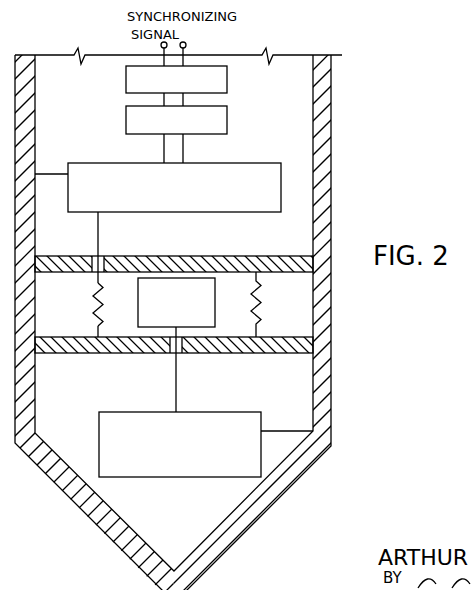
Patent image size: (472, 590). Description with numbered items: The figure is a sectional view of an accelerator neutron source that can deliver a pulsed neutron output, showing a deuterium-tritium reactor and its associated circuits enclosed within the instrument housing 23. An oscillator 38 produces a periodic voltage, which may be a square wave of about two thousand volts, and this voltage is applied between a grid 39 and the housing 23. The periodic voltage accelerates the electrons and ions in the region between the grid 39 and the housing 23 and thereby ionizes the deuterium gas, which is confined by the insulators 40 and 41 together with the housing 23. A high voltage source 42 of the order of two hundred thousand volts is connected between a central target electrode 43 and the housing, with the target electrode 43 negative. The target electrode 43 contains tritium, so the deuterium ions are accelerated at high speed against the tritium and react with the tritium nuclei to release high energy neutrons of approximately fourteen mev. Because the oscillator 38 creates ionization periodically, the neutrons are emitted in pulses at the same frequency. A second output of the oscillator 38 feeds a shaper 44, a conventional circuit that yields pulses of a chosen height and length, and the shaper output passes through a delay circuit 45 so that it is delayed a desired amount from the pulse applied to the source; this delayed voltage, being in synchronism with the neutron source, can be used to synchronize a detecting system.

The instrument housing 23 is at (295, 482).
The oscillator 38 is at (255, 163).
The grid 39 is at (96, 300).
The insulator 40 is at (217, 256).
The insulator 41 is at (266, 353).
The high voltage source 42 is at (231, 412).
The central target electrode 43 is at (138, 301).
The shaper 44 is at (228, 123).
The delay circuit 45 is at (228, 81).